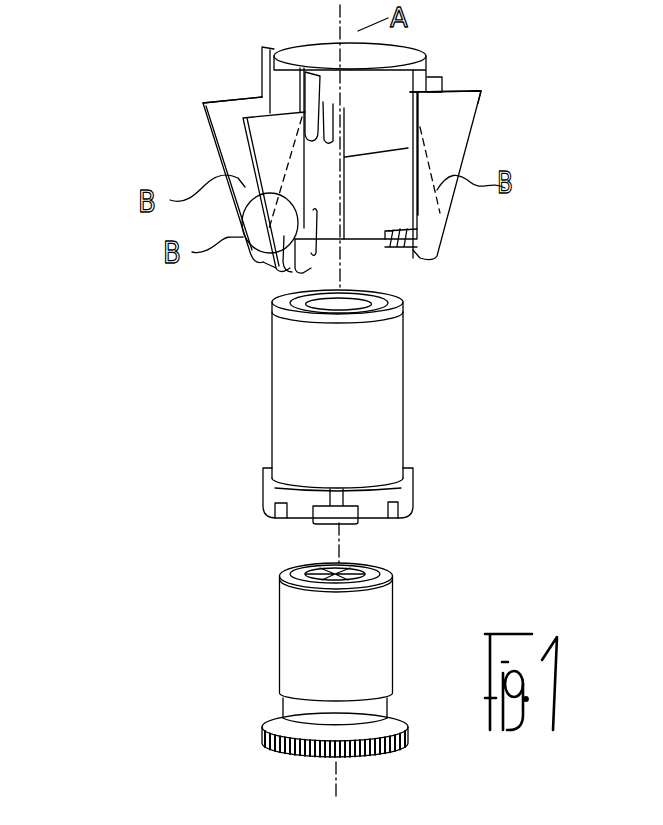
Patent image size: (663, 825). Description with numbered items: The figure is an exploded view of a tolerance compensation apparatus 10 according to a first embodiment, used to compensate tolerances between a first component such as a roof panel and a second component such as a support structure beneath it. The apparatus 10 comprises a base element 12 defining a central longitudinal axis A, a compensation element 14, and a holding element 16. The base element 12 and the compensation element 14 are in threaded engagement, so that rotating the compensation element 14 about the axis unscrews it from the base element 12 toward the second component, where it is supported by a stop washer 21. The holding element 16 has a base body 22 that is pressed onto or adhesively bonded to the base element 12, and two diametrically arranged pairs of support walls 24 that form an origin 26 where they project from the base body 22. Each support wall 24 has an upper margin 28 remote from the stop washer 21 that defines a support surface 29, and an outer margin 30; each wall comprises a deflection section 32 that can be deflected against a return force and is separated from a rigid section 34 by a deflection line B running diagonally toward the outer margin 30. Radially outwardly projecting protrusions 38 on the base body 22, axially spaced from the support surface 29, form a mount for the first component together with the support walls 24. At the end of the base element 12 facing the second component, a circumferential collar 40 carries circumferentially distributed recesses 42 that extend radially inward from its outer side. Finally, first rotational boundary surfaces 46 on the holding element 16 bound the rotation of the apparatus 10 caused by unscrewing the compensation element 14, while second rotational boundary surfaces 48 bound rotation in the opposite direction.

The apparatus 10 is at (165, 470).
The base element 12 is at (405, 382).
The compensation element 14 is at (395, 630).
The holding element 16 is at (466, 202).
The stop washer 21 is at (408, 746).
The base body 22 is at (373, 210).
The support walls 24 is at (458, 150).
The origin 26 is at (308, 247).
The upper margin 28 is at (237, 97).
The support surface 29 is at (478, 89).
The outer margin 30 is at (210, 145).
The deflection section 32 is at (257, 132).
The rigid section 34 is at (277, 270).
The protrusions 38 is at (427, 70).
The collar 40 is at (407, 483).
The recesses 42 is at (273, 518).
The first rotational boundary surfaces 46 is at (323, 103).
The second rotational boundary surfaces 48 is at (320, 78).